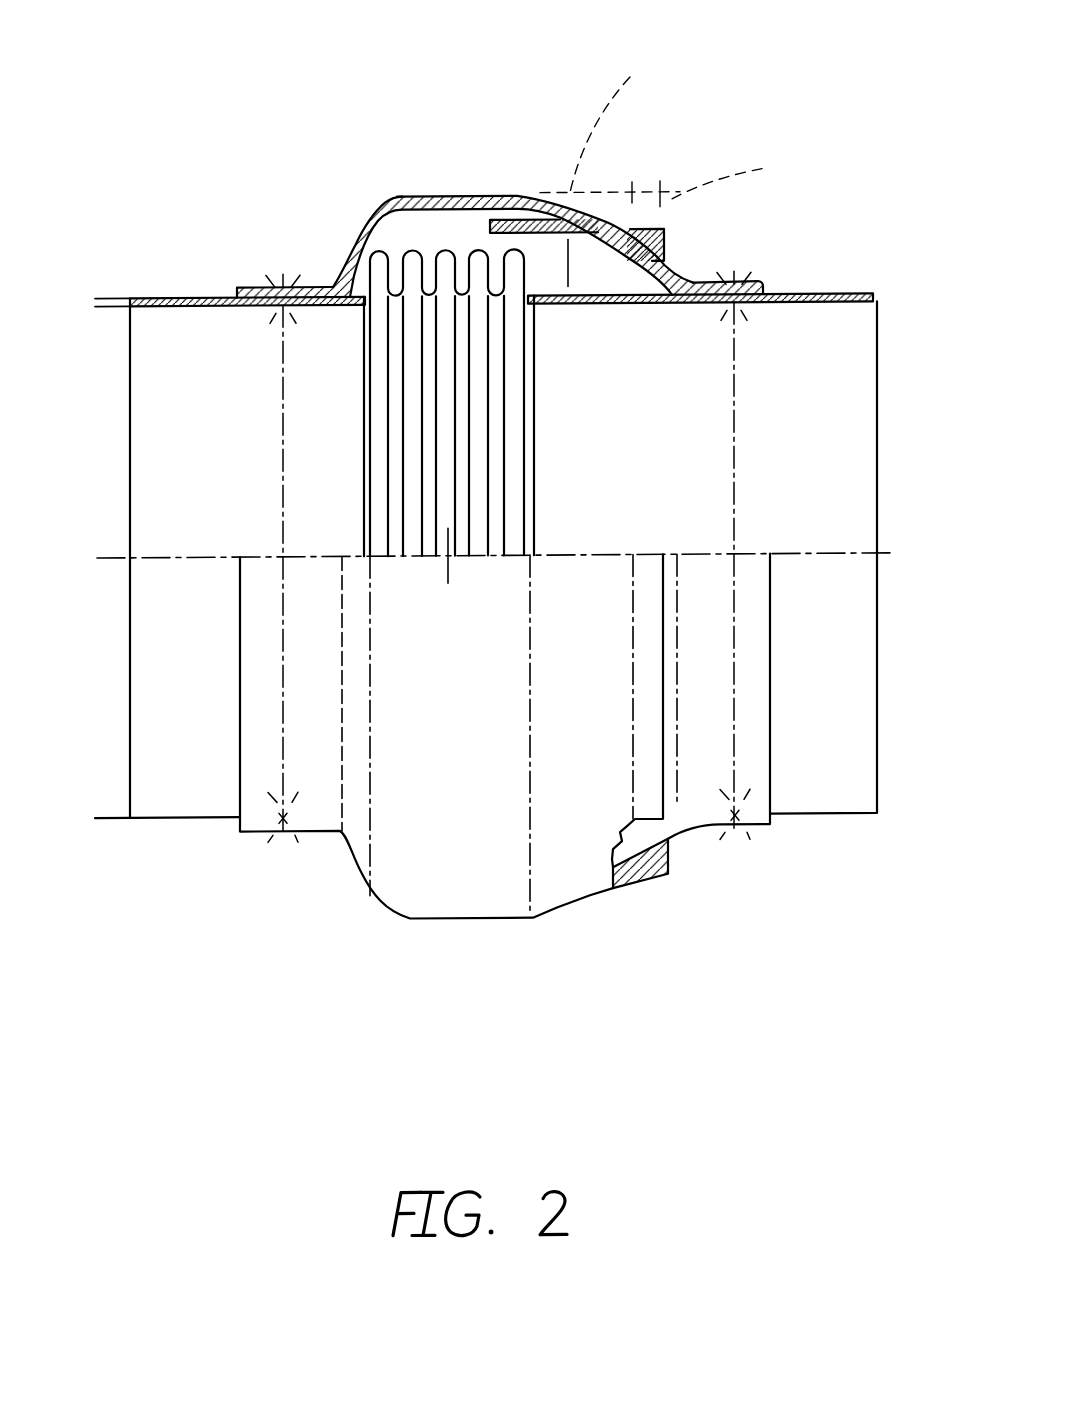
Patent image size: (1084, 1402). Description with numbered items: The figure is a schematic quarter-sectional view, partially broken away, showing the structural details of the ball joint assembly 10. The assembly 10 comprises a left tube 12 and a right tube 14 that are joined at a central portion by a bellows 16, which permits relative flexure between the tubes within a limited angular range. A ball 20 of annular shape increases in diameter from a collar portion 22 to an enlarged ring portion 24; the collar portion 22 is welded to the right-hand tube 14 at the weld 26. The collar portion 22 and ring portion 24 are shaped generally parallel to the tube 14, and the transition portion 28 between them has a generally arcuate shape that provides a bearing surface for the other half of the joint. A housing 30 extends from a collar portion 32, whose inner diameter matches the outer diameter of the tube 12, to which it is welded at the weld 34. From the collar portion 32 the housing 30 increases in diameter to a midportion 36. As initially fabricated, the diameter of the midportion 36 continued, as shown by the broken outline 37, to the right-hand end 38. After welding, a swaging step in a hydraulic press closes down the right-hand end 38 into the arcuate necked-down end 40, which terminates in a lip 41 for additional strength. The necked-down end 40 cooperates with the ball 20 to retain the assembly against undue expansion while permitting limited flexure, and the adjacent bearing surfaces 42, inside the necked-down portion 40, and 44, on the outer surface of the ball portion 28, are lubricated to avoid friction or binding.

The ball joint assembly 10 is at (482, 133).
The left tube 12 is at (160, 296).
The right tube 14 is at (880, 297).
The bellows 16 is at (403, 245).
The ball 20 is at (668, 260).
The collar portion 22 is at (765, 288).
The enlarged ring portion 24 is at (514, 226).
The weld 26 is at (747, 304).
The transition portion 28 is at (618, 252).
The housing 30 is at (410, 190).
The collar portion 32 is at (243, 284).
The weld 34 is at (272, 305).
The midportion 36 is at (432, 195).
The broken outline 37 is at (610, 127).
The right-hand end 38 is at (737, 173).
The necked-down end 40 is at (640, 222).
The lip 41 is at (648, 876).
The bearing surface 42 is at (593, 197).
The bearing surface 44 is at (588, 220).